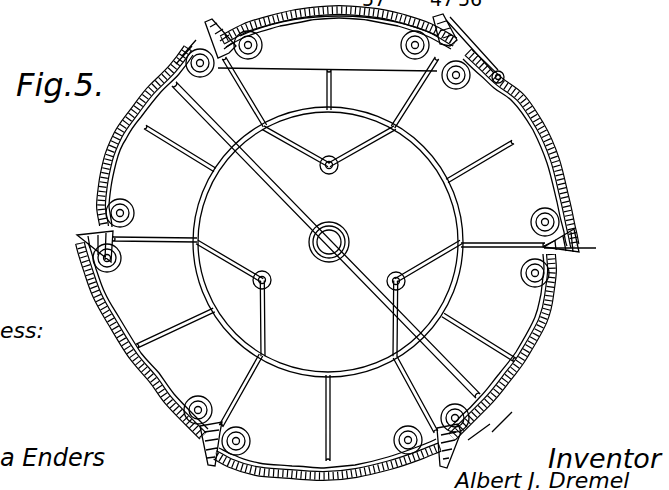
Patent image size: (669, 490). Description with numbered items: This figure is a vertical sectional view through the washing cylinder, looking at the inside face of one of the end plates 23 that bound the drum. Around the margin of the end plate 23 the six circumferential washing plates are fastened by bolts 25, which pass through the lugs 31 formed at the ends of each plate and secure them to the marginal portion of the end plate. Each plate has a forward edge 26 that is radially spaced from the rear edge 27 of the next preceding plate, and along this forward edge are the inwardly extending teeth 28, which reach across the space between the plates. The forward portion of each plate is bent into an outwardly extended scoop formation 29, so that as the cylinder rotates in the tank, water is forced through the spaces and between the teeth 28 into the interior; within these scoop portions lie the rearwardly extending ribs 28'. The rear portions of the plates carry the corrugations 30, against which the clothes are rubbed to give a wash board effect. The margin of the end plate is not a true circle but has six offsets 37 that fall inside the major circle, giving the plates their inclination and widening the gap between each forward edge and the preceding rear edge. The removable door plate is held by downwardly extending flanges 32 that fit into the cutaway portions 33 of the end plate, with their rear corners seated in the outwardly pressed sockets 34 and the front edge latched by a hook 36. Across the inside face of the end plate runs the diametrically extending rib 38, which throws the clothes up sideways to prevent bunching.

The end plate 23 is at (328, 242).
The bolts 25 is at (419, 52).
The forward edge 26 is at (185, 459).
The rear edge 27 is at (544, 246).
The teeth 28 is at (333, 240).
The rearwardly extending ribs 28' is at (331, 240).
The scoop formation 29 is at (213, 40).
The corrugations 30 is at (118, 139).
The lugs 31 is at (115, 251).
The downwardly extending flanges 32 is at (339, 38).
The cutaway portions 33 is at (358, 68).
The outwardly pressed sockets 34 is at (216, 60).
The hook 36 is at (474, 53).
The offsets 37 is at (88, 235).
The diametrically extending rib 38 is at (303, 208).